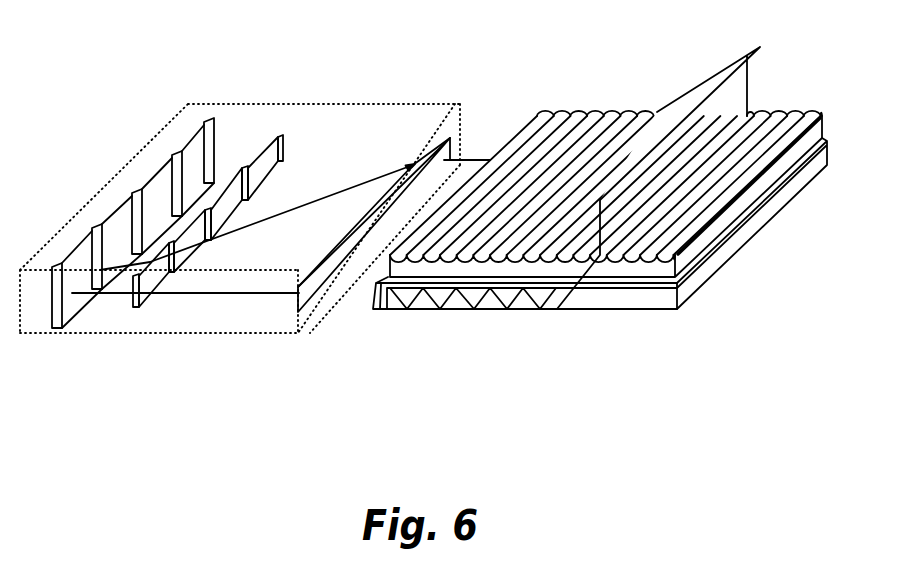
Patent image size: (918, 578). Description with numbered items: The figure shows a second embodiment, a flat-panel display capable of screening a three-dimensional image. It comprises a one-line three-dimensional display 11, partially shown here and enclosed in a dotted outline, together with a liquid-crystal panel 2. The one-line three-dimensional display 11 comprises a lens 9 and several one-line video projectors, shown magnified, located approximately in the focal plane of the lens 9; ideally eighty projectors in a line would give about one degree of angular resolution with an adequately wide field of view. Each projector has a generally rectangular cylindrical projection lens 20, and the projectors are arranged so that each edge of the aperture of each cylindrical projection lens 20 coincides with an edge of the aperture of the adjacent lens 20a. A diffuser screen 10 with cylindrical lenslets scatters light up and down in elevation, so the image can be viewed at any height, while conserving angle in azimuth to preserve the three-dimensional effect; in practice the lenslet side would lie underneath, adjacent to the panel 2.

The liquid-crystal panel 2 is at (691, 303).
The lens 9 is at (446, 139).
The diffuser screen 10 is at (542, 115).
The one-line three-dimensional display 11 is at (309, 97).
The cylindrical projection lens 20 is at (254, 156).
The adjacent lens 20a is at (217, 191).